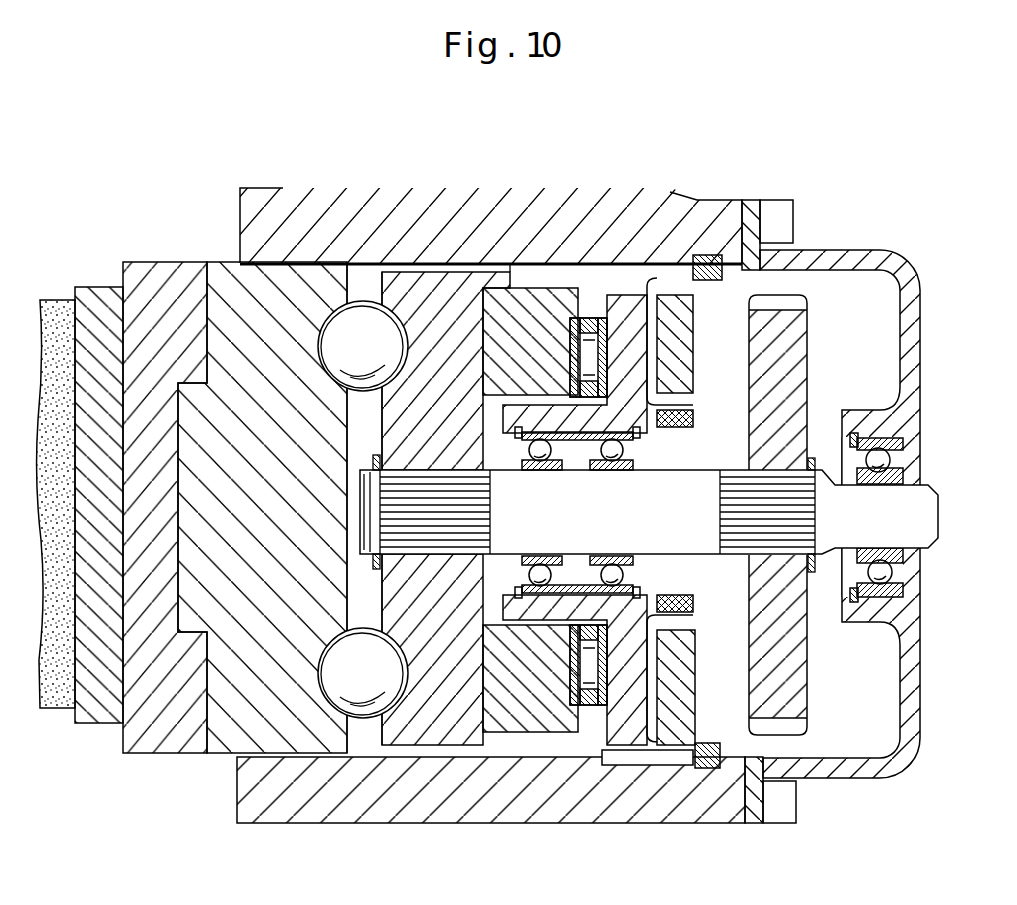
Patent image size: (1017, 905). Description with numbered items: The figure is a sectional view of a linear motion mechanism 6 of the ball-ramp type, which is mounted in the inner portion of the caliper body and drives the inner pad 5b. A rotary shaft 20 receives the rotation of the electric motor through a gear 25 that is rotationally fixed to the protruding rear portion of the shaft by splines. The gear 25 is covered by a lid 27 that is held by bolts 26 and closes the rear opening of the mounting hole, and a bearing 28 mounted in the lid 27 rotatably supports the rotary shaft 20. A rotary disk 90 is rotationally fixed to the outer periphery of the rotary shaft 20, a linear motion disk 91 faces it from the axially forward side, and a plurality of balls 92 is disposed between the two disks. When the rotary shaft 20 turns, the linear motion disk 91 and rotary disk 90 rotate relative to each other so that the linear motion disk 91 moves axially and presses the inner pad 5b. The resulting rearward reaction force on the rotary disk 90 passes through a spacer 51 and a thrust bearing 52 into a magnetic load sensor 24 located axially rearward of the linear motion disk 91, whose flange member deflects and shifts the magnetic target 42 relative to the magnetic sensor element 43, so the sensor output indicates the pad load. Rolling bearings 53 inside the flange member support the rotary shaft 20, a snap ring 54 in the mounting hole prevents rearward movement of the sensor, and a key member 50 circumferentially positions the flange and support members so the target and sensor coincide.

The inner pad 5b is at (54, 308).
The balls 92 is at (220, 262).
The linear motion disk 91 is at (268, 275).
The linear motion mechanism 6 is at (382, 268).
The rotary disk 90 is at (440, 288).
The spacer 51 is at (543, 290).
The thrust bearing 52 is at (597, 318).
The magnetic load sensor 24 is at (673, 315).
The snap ring 54 is at (722, 255).
The bolts 26 is at (790, 222).
The magnetic sensor element 43 is at (693, 398).
The magnetic target 42 is at (693, 417).
The bearing 28 is at (905, 463).
The rotary shaft 20 is at (942, 510).
The gear 25 is at (808, 655).
The lid 27 is at (915, 766).
The rolling bearings 53 is at (598, 458).
The key member 50 is at (620, 762).